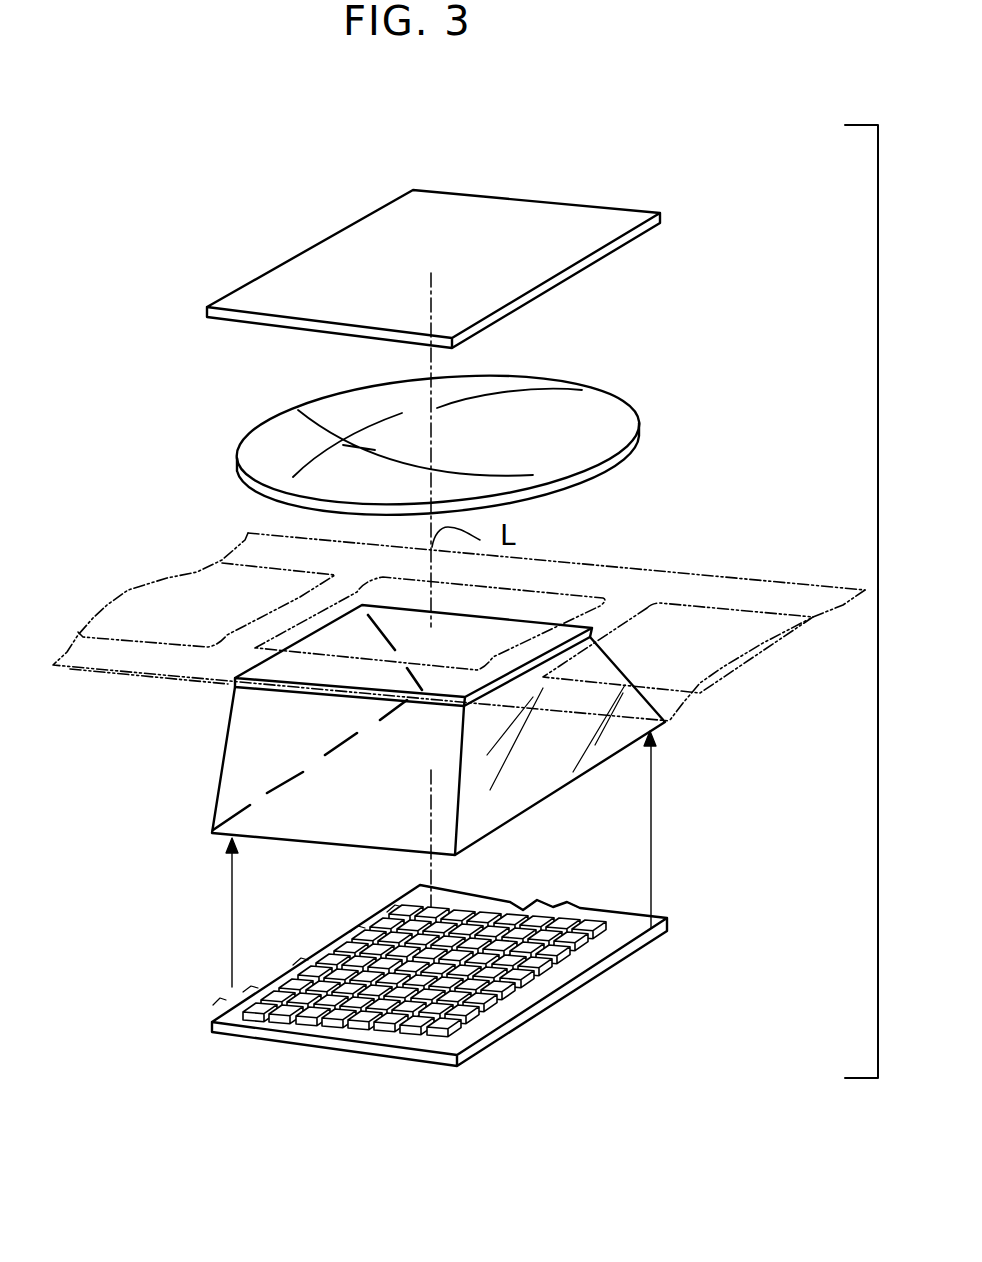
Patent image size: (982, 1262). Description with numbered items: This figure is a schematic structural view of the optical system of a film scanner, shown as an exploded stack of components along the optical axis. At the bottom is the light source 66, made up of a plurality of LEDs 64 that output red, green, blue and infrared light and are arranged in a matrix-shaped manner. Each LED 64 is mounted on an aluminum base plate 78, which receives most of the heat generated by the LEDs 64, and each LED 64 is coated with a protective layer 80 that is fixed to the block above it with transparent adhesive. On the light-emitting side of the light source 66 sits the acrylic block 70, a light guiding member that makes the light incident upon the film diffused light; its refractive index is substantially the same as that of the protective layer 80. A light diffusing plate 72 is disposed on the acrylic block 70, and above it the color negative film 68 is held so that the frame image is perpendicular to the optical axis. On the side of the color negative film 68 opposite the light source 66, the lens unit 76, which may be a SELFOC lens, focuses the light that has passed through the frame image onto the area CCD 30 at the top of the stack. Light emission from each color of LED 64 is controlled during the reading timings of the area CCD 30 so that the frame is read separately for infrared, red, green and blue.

The area CCD 30 is at (583, 213).
The lens unit 76 is at (630, 407).
The color negative film 68 is at (688, 572).
The acrylic block 70 is at (382, 730).
The light diffusing plate 72 is at (232, 682).
The protective layer 80 is at (560, 900).
The aluminum base plate 78 is at (647, 937).
The LEDs 64 is at (485, 1027).
The light source 66 is at (494, 971).